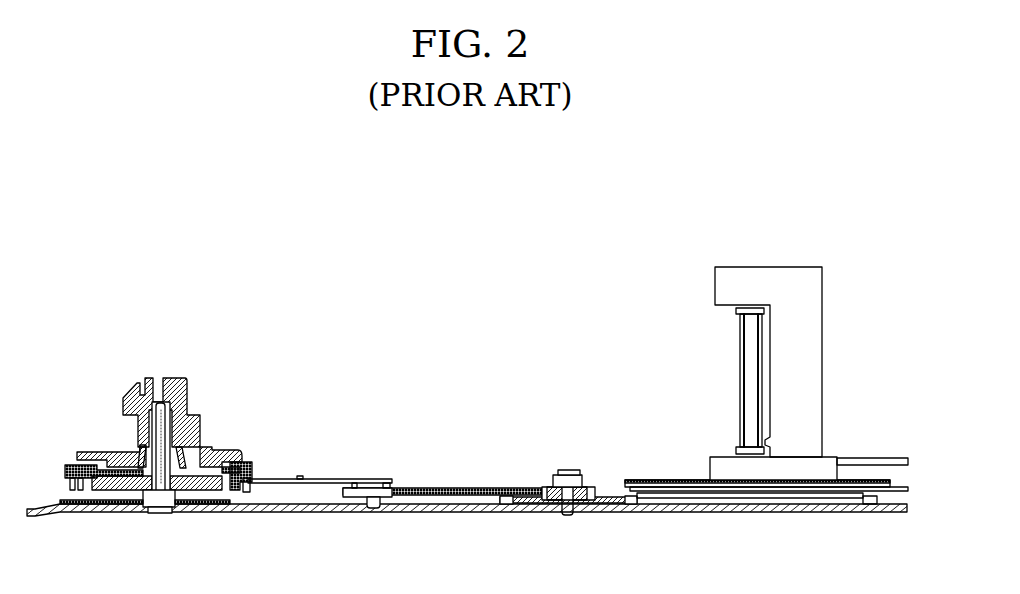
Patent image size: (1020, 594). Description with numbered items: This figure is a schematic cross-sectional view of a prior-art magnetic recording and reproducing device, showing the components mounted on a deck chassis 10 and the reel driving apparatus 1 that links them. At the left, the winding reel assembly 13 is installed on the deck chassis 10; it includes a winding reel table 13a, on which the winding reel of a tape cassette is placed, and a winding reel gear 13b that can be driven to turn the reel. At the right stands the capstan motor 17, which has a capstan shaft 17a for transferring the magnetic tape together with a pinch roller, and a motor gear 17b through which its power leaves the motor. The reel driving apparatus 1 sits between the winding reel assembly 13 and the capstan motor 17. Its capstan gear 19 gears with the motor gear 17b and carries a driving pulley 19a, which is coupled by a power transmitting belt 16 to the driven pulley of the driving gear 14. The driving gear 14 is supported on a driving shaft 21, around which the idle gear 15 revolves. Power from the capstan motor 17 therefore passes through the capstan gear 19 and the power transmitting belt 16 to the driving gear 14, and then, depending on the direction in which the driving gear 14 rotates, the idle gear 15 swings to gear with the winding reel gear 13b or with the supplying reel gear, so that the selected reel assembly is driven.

The reel driving apparatus 1 is at (385, 371).
The deck chassis 10 is at (465, 513).
The winding reel assembly 13 is at (189, 371).
The winding reel table 13a is at (104, 447).
The winding reel gear 13b is at (67, 468).
The driving gear 14 is at (374, 487).
The idle gear 15 is at (275, 484).
The power transmitting belt 16 is at (436, 489).
The capstan motor 17 is at (823, 342).
The capstan shaft 17a is at (745, 338).
The motor gear 17b is at (717, 500).
The capstan gear 19 is at (585, 488).
The driving pulley 19a is at (548, 485).
The driving shaft 21 is at (375, 509).